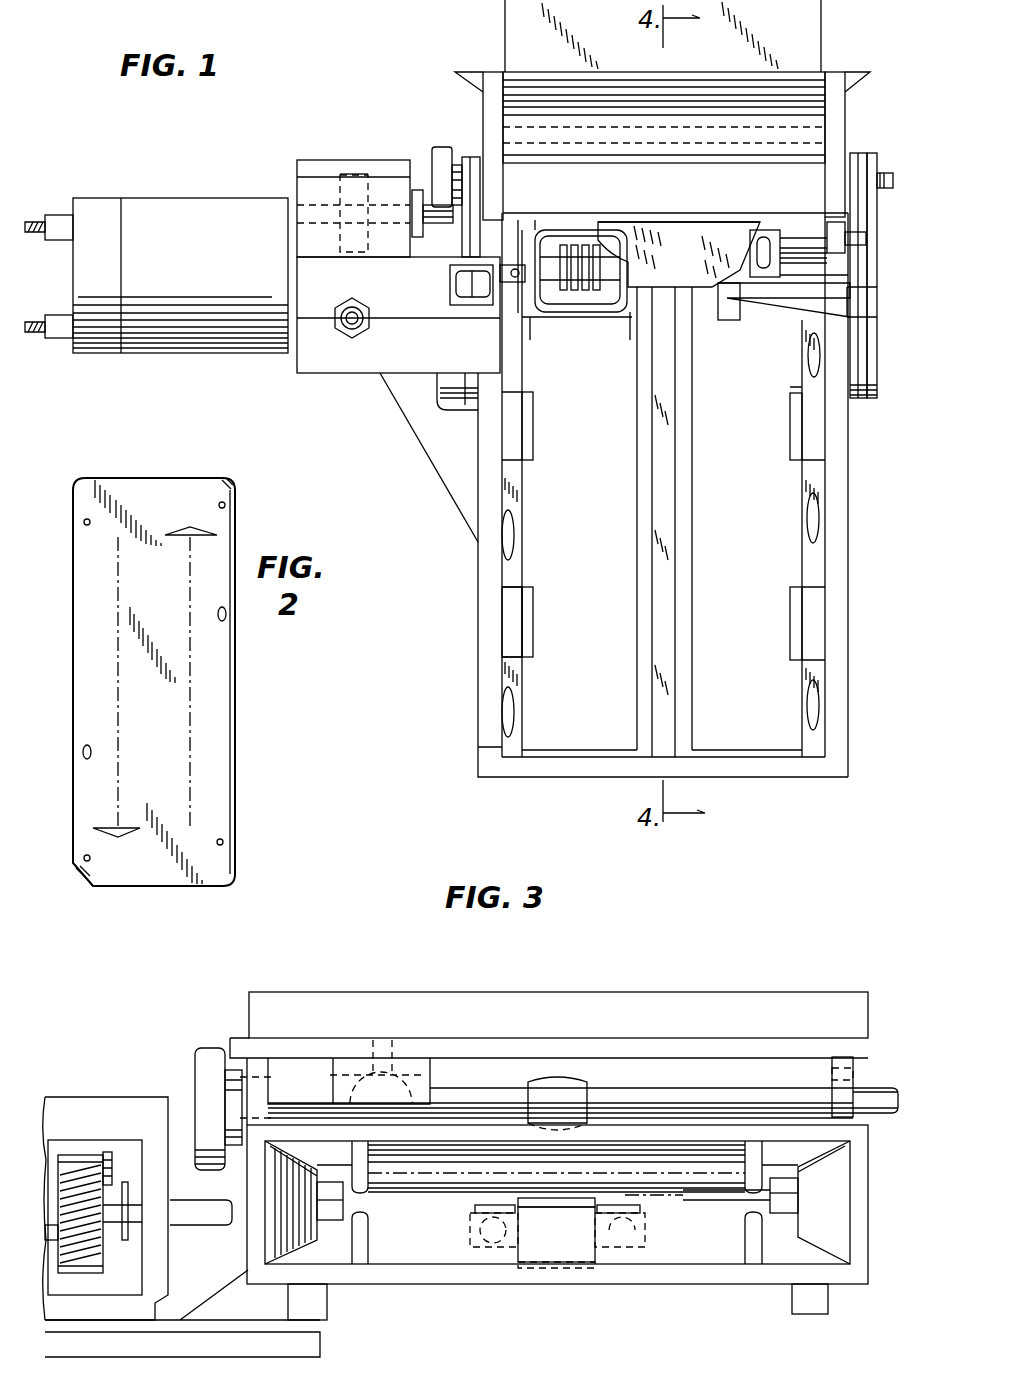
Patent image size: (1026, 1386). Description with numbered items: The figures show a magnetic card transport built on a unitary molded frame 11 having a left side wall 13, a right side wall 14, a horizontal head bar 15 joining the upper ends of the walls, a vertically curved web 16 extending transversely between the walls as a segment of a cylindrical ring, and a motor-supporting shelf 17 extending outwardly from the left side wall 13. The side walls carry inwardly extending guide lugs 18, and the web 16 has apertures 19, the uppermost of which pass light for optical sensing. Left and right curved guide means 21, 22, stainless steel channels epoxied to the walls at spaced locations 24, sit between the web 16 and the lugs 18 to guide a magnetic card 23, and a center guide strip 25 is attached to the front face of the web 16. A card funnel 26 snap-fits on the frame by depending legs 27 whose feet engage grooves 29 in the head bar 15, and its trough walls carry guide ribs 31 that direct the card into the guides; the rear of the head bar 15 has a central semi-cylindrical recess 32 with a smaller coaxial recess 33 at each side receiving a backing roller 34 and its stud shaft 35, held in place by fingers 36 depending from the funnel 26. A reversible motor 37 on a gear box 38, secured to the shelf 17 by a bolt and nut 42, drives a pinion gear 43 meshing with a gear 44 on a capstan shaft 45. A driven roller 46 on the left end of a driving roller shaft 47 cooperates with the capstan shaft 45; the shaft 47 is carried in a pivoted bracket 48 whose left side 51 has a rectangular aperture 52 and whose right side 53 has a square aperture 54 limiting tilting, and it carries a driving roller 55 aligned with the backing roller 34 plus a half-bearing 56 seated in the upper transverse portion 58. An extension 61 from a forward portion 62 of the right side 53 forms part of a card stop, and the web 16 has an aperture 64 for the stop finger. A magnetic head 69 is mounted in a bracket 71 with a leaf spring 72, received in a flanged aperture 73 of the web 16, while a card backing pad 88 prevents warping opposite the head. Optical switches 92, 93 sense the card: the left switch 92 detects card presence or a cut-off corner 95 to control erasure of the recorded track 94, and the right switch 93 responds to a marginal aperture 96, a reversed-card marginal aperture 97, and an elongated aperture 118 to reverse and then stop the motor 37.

In FIG. 1, the frame 11 is at (470, 510).
In FIG. 1, the left side wall 13 is at (478, 620).
In FIG. 3, the left side wall 13 is at (318, 1293).
In FIG. 1, the right side wall 14 is at (838, 550).
In FIG. 3, the right side wall 14 is at (798, 1296).
In FIG. 1, the horizontal head bar 15 is at (750, 194).
In FIG. 1, the curved web 16 is at (750, 504).
In FIG. 1, the motor-supporting shelf 17 is at (370, 367).
In FIG. 3, the motor-supporting shelf 17 is at (212, 1347).
In FIG. 1, the guide lugs 18 is at (510, 645).
In FIG. 1, the apertures 19 is at (530, 614).
In FIG. 1, the left curved guide means 21 is at (515, 562).
In FIG. 3, the left curved guide means 21 is at (333, 1212).
In FIG. 1, the right curved guide means 22 is at (810, 581).
In FIG. 3, the right curved guide means 22 is at (790, 1185).
In FIG. 1, the magnetic card 23 is at (728, 61).
In FIG. 2, the magnetic card 23 is at (220, 722).
In FIG. 1, the epoxy locations 24 is at (510, 517).
In FIG. 1, the center guide strip 25 is at (660, 580).
In FIG. 1, the card funnel 26 is at (840, 61).
In FIG. 3, the card funnel 26 is at (830, 1233).
In FIG. 1, the legs 27 is at (495, 195).
In FIG. 1, the grooves 29 is at (690, 215).
In FIG. 3, the guide ribs 31 is at (358, 1247).
In FIG. 3, the central semi-cylindrical recess 32 is at (550, 1256).
In FIG. 3, the coaxial recess 33 is at (640, 1219).
In FIG. 3, the backing roller 34 is at (564, 1195).
In FIG. 3, the stud shaft 35 is at (607, 1224).
In FIG. 3, the fingers 36 is at (622, 1197).
In FIG. 1, the reversible motor 37 is at (180, 218).
In FIG. 1, the gear box 38 is at (312, 162).
In FIG. 3, the gear box 38 is at (68, 1108).
In FIG. 1, the bolt and nut 42 is at (343, 332).
In FIG. 3, the pinion gear 43 is at (113, 1153).
In FIG. 1, the gear 44 is at (367, 185).
In FIG. 3, the gear 44 is at (103, 1265).
In FIG. 1, the capstan shaft 45 is at (443, 218).
In FIG. 3, the capstan shaft 45 is at (193, 1227).
In FIG. 1, the driven roller 46 is at (440, 150).
In FIG. 3, the driven roller 46 is at (203, 1070).
In FIG. 1, the driving roller shaft 47 is at (893, 179).
In FIG. 3, the driving roller shaft 47 is at (482, 1102).
In FIG. 1, the bracket 48 is at (880, 347).
In FIG. 3, the bracket 48 is at (332, 1023).
In FIG. 1, the left side of bracket 51 is at (456, 388).
In FIG. 3, the left side of bracket 51 is at (248, 1062).
In FIG. 3, the rectangular aperture 52 is at (262, 1067).
In FIG. 1, the right side of bracket 53 is at (867, 271).
In FIG. 3, the right side of bracket 53 is at (845, 1060).
In FIG. 3, the square aperture 54 is at (857, 1077).
In FIG. 3, the driving roller 55 is at (560, 1075).
In FIG. 3, the half-bearing 56 is at (380, 1075).
In FIG. 3, the upper transverse portion 58 is at (552, 1005).
In FIG. 1, the extension 61 is at (797, 290).
In FIG. 1, the forward portion 62 is at (858, 308).
In FIG. 1, the aperture 64 is at (740, 323).
In FIG. 1, the magnetic head 69 is at (568, 238).
In FIG. 1, the bracket 71 is at (584, 313).
In FIG. 1, the leaf spring 72 is at (628, 286).
In FIG. 1, the flanged aperture 73 is at (548, 317).
In FIG. 1, the card backing pad 88 is at (772, 232).
In FIG. 1, the left optical switch 92 is at (517, 288).
In FIG. 1, the right optical switch 93 is at (836, 242).
In FIG. 2, the recorded track 94 is at (118, 648).
In FIG. 2, the corner 95 is at (83, 887).
In FIG. 2, the marginal aperture 96 is at (84, 522).
In FIG. 2, the marginal aperture 97 is at (226, 507).
In FIG. 2, the elongated aperture 118 is at (227, 616).